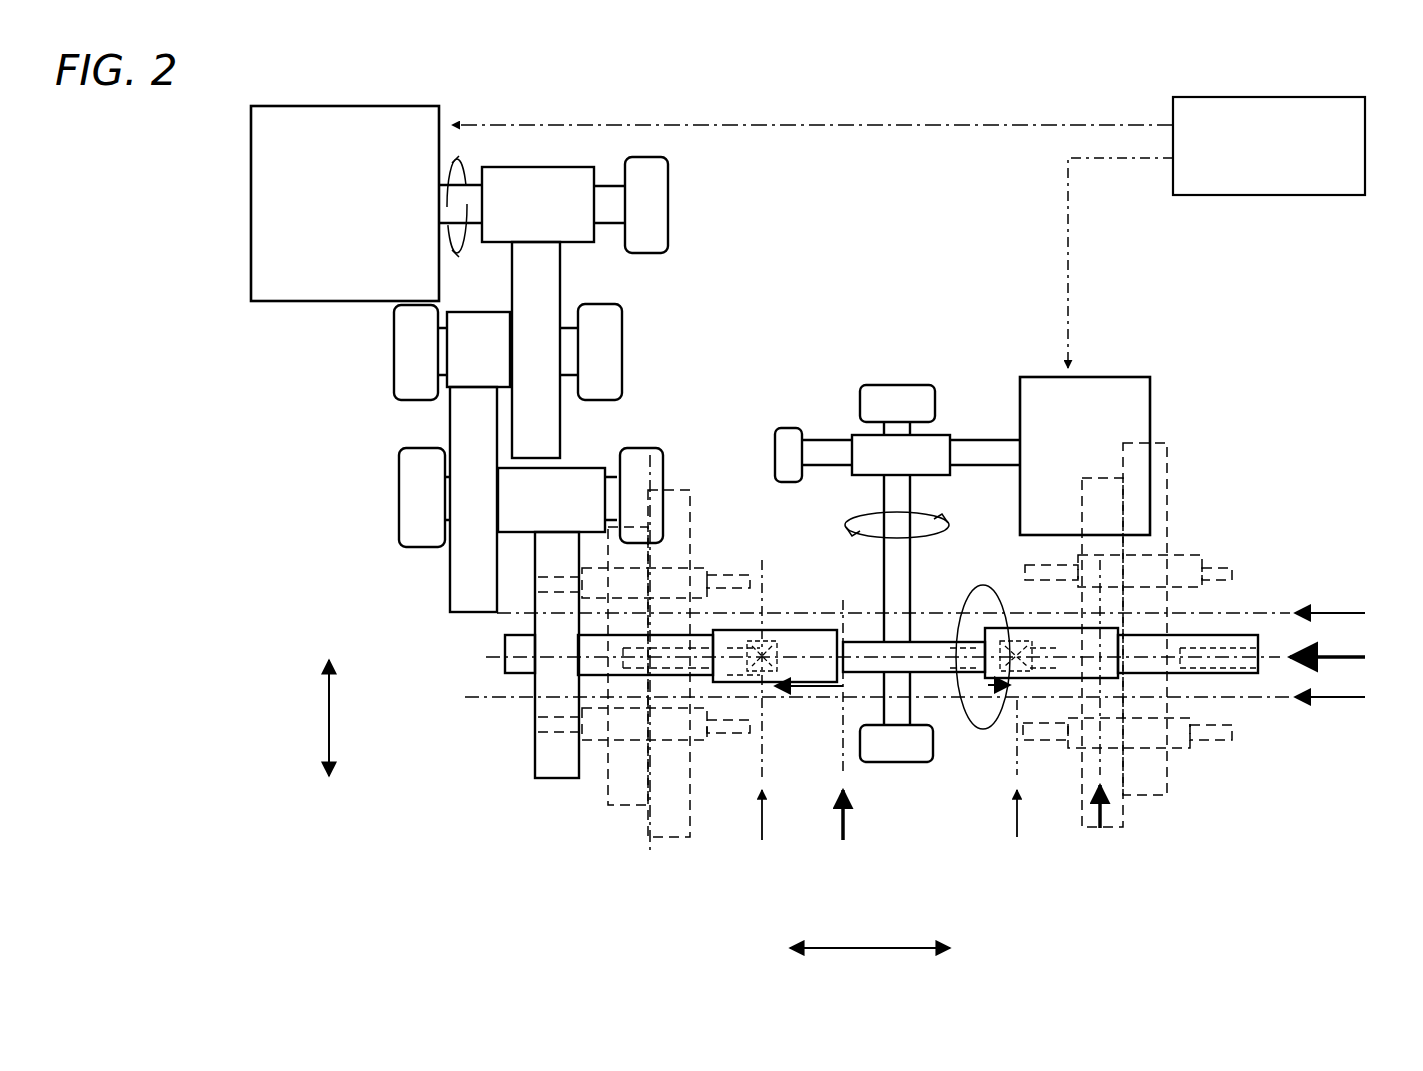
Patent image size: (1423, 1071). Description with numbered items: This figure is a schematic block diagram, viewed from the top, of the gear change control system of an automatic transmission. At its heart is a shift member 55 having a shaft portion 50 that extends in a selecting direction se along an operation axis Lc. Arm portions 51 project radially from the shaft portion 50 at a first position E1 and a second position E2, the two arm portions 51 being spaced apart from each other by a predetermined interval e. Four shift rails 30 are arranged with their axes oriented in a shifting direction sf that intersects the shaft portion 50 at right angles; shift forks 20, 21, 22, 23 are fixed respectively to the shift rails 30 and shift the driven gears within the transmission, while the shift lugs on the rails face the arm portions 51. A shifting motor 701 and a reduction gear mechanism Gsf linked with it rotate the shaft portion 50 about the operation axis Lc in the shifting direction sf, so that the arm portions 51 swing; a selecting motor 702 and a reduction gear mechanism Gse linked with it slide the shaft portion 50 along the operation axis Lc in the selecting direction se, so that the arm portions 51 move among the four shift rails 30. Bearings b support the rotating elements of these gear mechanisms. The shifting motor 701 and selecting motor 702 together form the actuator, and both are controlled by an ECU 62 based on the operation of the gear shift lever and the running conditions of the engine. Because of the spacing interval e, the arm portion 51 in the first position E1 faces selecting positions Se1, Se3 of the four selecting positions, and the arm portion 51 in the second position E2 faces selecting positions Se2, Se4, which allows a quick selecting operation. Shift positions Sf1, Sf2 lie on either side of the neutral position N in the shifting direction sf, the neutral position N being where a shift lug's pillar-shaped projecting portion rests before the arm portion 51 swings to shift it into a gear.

The shifting motor 701 is at (374, 257).
The selecting motor 702 is at (1135, 410).
The ECU 62 is at (1208, 113).
The bearing b is at (650, 233).
The reduction gear mechanism Gsf is at (433, 419).
The reduction gear mechanism Gse is at (962, 430).
The shift fork 21 is at (718, 566).
The shift fork 20 is at (748, 748).
The shift fork 22 is at (1226, 750).
The shift fork 23 is at (1228, 568).
The shift rail 30 is at (665, 835).
The shaft portion 50 is at (865, 608).
The arm portion 51 is at (747, 700).
The shift member 55 is at (940, 775).
The first position E1 is at (766, 632).
The second position E2 is at (1008, 634).
The predetermined interval e is at (918, 685).
The operation axis Lc is at (500, 672).
The neutral position N is at (1345, 655).
The first feed position Sf1 is at (1335, 697).
The second feed position Sf2 is at (1322, 613).
The shifting direction sf is at (331, 697).
The selecting direction se is at (910, 946).
The selecting position Se1 is at (765, 830).
The selecting position Se2 is at (1020, 815).
The selecting position Se3 is at (846, 825).
The selecting position Se4 is at (1103, 812).